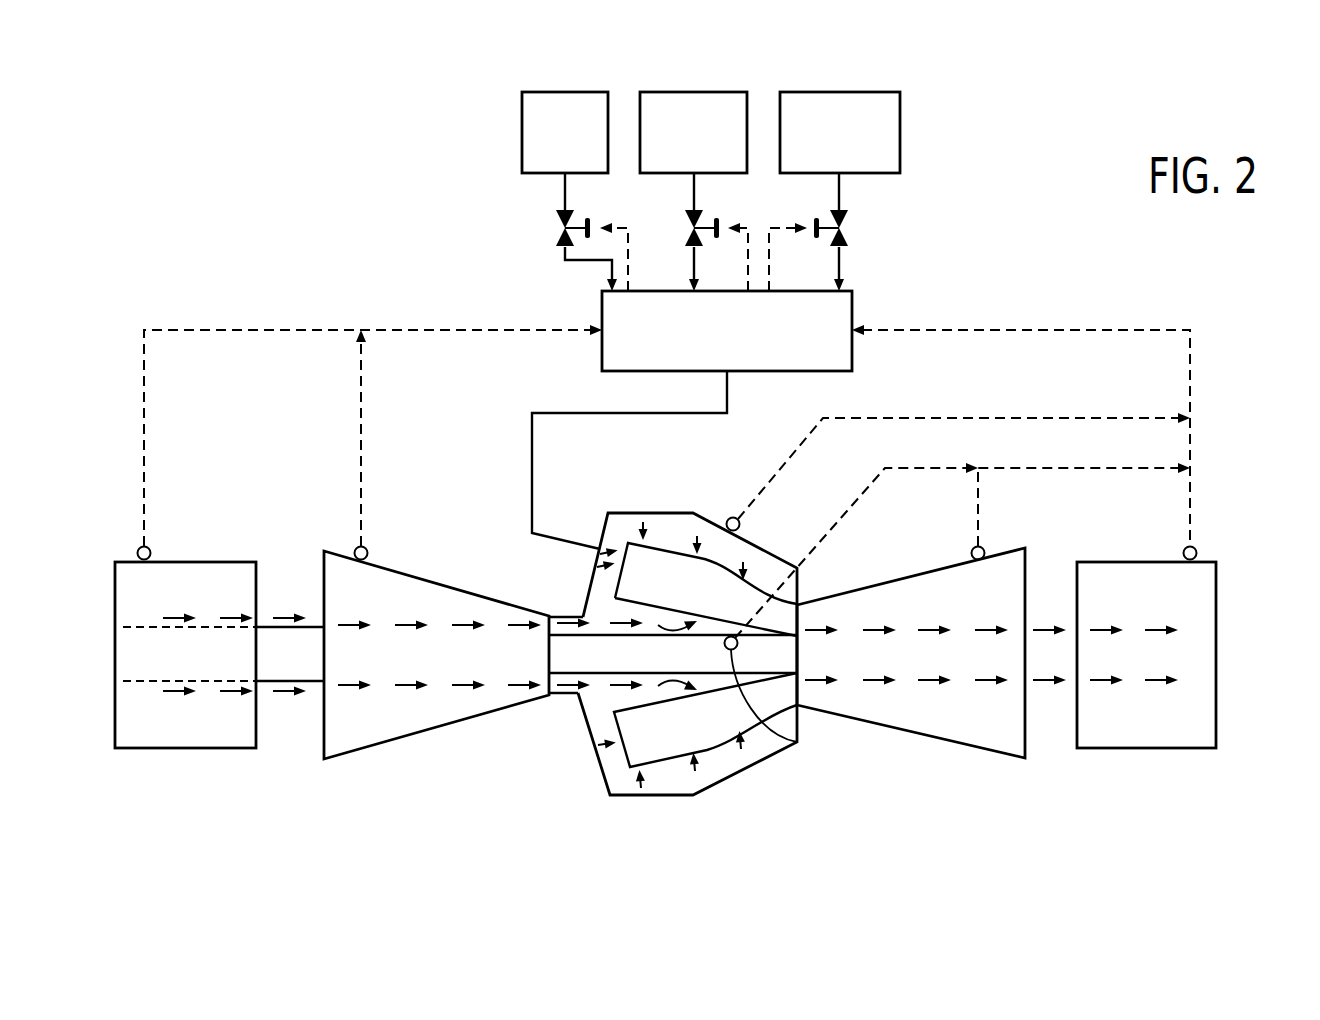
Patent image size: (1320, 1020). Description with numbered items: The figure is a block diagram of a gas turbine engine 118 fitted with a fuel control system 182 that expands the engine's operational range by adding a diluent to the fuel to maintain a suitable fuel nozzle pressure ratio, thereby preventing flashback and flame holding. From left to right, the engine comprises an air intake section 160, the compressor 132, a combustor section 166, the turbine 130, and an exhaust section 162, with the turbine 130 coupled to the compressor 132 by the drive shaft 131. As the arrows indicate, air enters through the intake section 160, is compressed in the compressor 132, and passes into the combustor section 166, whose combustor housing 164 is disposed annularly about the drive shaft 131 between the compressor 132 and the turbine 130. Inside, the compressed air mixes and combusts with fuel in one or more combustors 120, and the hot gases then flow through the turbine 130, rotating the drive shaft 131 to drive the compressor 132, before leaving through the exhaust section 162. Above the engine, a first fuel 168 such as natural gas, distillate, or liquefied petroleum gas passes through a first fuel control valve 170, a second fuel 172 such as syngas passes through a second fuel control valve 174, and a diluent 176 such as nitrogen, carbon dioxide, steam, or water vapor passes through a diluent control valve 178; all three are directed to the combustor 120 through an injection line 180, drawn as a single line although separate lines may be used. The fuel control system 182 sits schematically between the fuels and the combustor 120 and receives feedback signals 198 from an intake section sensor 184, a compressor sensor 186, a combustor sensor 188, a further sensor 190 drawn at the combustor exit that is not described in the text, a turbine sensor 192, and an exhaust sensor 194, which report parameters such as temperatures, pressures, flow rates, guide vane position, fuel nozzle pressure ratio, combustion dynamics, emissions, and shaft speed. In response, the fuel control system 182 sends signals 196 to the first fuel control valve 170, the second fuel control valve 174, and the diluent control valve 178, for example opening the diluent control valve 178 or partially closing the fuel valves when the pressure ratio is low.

The gas turbine engine 118 is at (706, 628).
The combustor 120 is at (770, 545).
The turbine 130 is at (865, 585).
The drive shaft 131 is at (789, 669).
The compressor 132 is at (437, 582).
The air intake section 160 is at (187, 562).
The exhaust section 162 is at (1216, 562).
The combustor housing 164 is at (705, 515).
The combustor section 166 is at (667, 760).
The first fuel 168 is at (522, 130).
The first fuel control valve 170 is at (560, 233).
The second fuel 172 is at (695, 92).
The second fuel control valve 174 is at (688, 221).
The diluent 176 is at (840, 92).
The diluent control valve 178 is at (848, 235).
The injection line 180 is at (532, 470).
The fuel control system 182 is at (852, 305).
The intake section sensor 184 is at (140, 548).
The compressor sensor 186 is at (358, 547).
The combustor sensor 188 is at (740, 524).
The combustor exit sensor 190 is at (797, 742).
The turbine sensor 192 is at (985, 548).
The exhaust sensor 194 is at (1185, 548).
The signals 196 is at (617, 225).
The signals 198 is at (1045, 330).